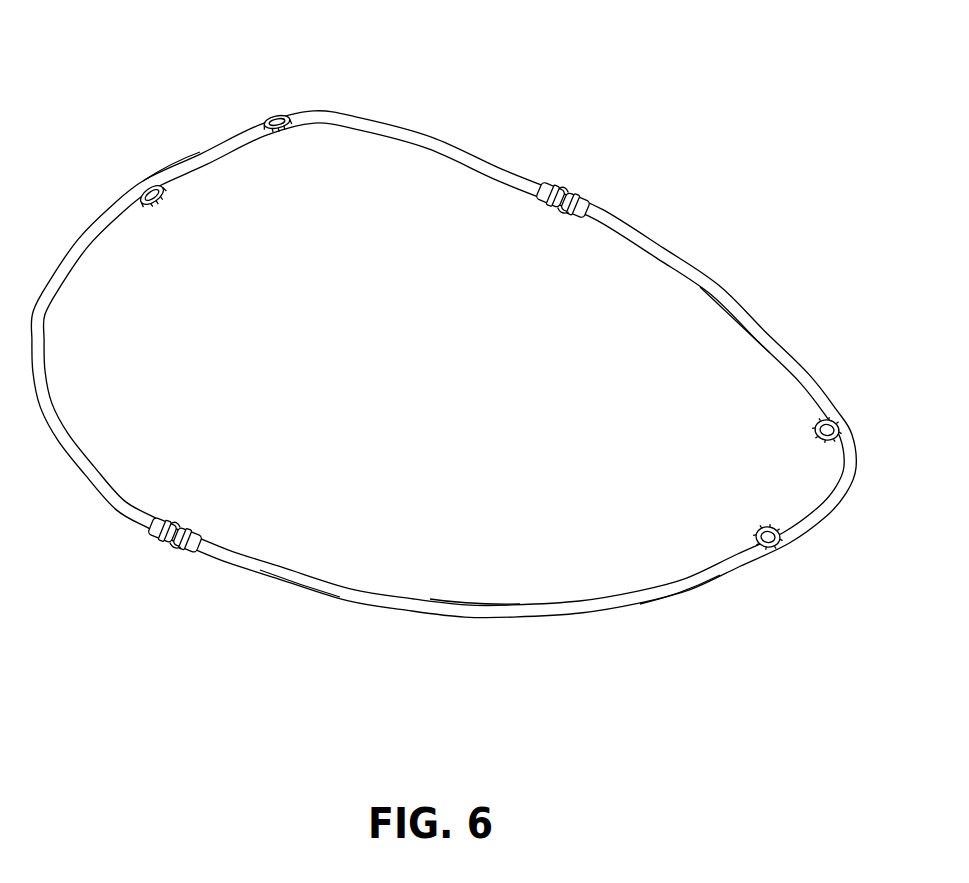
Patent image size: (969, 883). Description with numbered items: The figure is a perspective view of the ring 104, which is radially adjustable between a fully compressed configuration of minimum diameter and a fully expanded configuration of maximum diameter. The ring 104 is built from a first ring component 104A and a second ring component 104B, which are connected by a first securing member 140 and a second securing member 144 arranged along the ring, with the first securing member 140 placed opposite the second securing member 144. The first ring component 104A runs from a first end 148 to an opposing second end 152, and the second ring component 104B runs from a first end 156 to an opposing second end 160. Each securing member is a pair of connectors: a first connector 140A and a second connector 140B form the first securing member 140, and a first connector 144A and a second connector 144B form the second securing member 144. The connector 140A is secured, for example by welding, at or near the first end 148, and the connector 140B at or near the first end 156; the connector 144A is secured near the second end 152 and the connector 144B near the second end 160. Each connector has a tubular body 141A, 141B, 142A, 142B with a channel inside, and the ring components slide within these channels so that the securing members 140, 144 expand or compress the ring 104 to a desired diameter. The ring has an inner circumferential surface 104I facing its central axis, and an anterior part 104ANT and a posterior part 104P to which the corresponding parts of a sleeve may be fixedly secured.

The ring 104 is at (198, 105).
The first ring component 104A is at (201, 157).
The anterior part of the ring 104ANT is at (725, 307).
The inner circumferential surface 104I is at (470, 602).
The posterior part of the ring 104P is at (297, 585).
The second ring component 104B is at (673, 598).
The first securing member 140 is at (569, 203).
The first connector of the first securing member 140A is at (540, 196).
The second connector of the first securing member 140B is at (580, 196).
The body of the first connector 141A is at (553, 203).
The body of the second connector 141B is at (587, 204).
The first end of the second ring component 156 is at (560, 183).
The first end of the first ring component 148 is at (578, 218).
The second securing member 144 is at (174, 520).
The first connector of the second securing member 144A is at (157, 535).
The second connector of the second securing member 144B is at (197, 531).
The body of the first connector of the second securing member 142A is at (165, 542).
The body of the second connector of the second securing member 142B is at (187, 530).
The second end of the second ring component 160 is at (167, 522).
The second end of the first ring component 152 is at (187, 550).